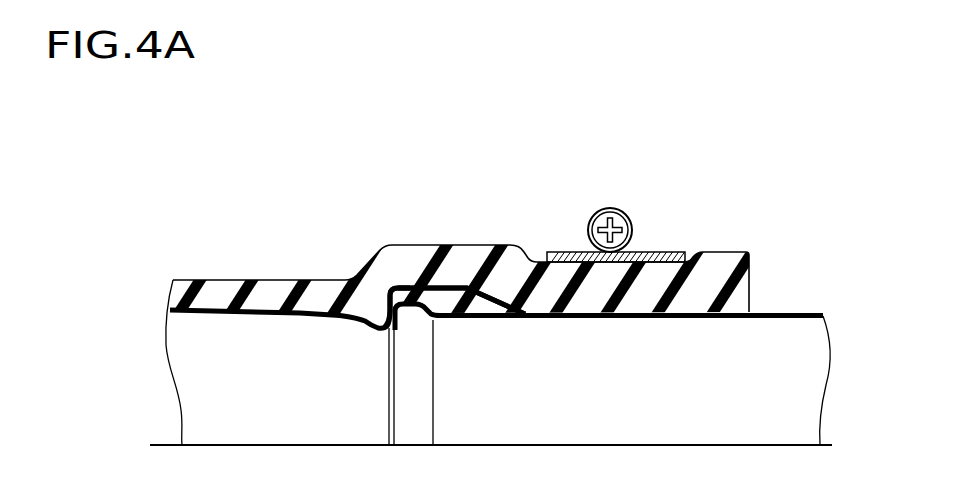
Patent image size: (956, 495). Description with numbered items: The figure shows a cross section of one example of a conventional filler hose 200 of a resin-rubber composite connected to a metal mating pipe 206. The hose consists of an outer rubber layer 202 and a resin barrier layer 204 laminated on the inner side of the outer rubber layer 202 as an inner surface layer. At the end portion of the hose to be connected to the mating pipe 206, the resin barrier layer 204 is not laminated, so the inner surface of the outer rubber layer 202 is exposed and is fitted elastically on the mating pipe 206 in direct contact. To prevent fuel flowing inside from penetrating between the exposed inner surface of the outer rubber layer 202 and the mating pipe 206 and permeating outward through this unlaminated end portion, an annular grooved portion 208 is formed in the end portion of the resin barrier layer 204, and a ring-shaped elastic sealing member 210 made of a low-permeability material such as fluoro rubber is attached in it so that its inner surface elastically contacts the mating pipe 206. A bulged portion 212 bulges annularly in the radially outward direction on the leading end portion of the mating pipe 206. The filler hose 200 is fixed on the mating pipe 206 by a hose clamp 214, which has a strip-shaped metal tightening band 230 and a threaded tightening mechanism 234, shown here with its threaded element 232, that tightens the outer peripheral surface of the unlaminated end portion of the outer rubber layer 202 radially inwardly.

The filler hose 200 is at (497, 265).
The outer rubber layer 202 is at (222, 290).
The resin barrier layer 204 is at (207, 317).
The mating pipe 206 is at (807, 300).
The annular grooved portion 208 is at (450, 297).
The elastic sealing member 210 is at (466, 302).
The bulged portion 212 is at (395, 291).
The hose clamp 214 is at (633, 174).
The tightening band 230 is at (663, 251).
The sensor ring 232 is at (620, 208).
The tightening mechanism 234 is at (586, 199).